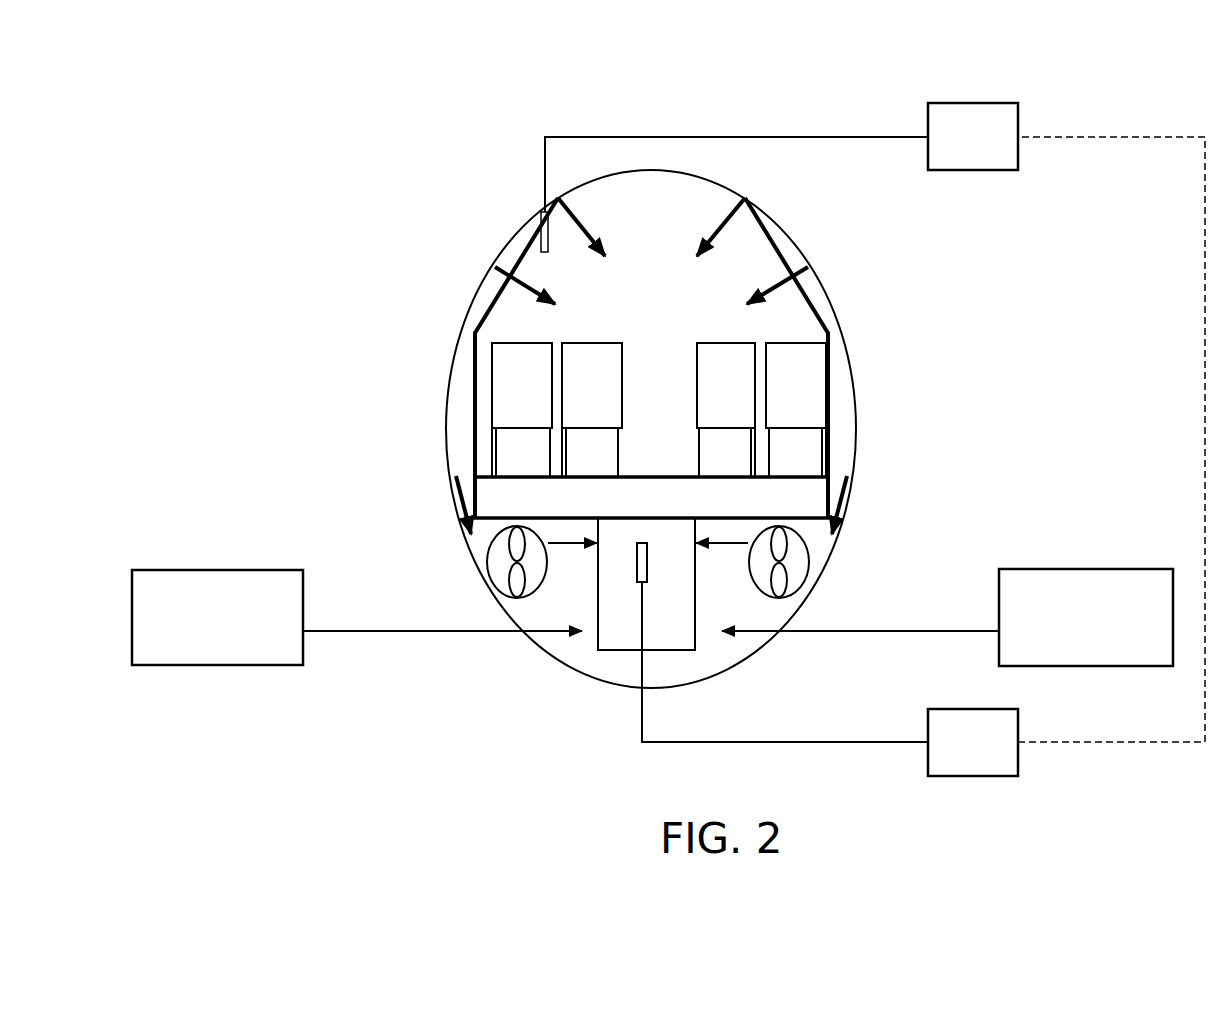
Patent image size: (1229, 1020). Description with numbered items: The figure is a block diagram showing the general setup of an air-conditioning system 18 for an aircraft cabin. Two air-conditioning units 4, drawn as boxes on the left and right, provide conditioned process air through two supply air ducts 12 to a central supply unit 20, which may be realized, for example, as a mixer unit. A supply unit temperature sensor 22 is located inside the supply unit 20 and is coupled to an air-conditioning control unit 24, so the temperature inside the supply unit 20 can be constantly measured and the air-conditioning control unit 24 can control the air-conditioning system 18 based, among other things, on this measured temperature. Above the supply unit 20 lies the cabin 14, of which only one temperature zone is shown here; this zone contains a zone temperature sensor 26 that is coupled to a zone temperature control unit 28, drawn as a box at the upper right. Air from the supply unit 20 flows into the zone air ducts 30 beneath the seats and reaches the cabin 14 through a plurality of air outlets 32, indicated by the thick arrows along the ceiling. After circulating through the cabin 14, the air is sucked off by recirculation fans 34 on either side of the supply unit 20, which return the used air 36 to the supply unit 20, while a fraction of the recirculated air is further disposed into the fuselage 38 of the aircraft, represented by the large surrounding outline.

The air-conditioning unit 4 is at (218, 653).
The supply air duct 12 is at (357, 630).
The cabin 14 is at (673, 324).
The air-conditioning system 18 is at (283, 213).
The supply unit 20 is at (680, 608).
The supply unit temperature sensor 22 is at (650, 560).
The air-conditioning control unit 24 is at (1005, 721).
The zone temperature sensor 26 is at (540, 229).
The zone temperature control unit 28 is at (972, 125).
The zone air duct 30 is at (530, 517).
The air outlet 32 is at (556, 199).
The recirculation fan 34 is at (500, 576).
The used air 36 is at (458, 497).
The fuselage 38 is at (857, 407).